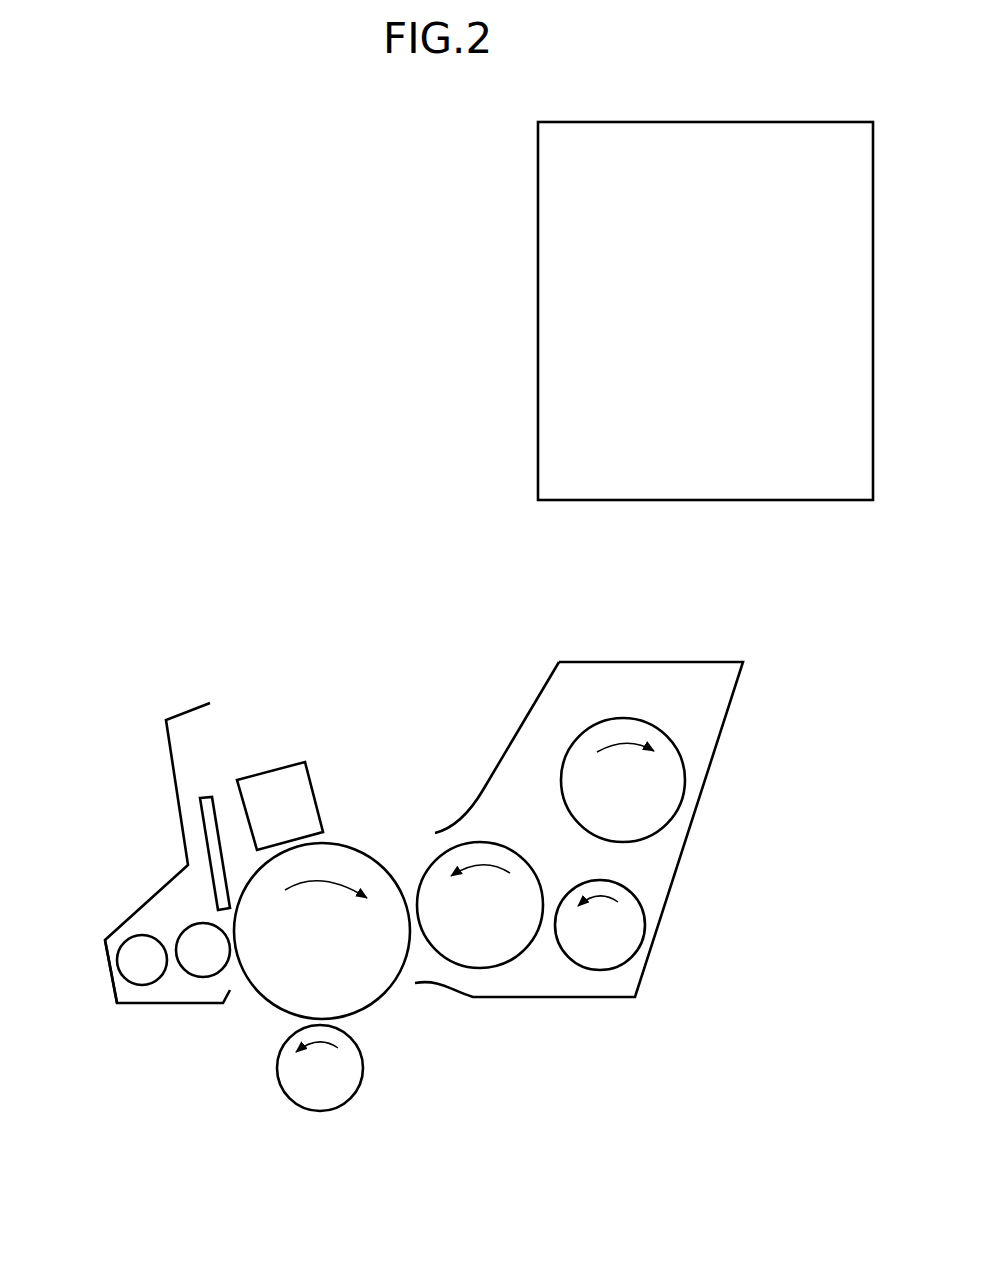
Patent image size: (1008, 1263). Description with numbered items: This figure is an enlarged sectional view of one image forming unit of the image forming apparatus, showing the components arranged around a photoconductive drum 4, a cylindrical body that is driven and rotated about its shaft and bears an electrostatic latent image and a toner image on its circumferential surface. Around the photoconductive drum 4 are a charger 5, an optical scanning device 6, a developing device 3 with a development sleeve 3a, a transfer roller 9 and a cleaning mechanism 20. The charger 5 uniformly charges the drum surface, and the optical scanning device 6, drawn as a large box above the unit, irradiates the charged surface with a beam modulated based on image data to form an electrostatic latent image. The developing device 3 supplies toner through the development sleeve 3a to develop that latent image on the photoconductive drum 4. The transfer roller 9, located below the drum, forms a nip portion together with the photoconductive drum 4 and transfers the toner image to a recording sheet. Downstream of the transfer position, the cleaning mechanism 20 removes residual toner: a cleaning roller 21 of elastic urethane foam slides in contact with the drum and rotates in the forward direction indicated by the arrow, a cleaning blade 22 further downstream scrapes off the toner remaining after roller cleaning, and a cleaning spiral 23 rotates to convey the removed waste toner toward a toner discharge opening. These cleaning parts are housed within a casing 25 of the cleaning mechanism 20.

The developing device 3 is at (700, 667).
The development sleeve 3a is at (512, 957).
The photoconductive drum 4 is at (395, 990).
The charger 5 is at (297, 773).
The optical scanning device 6 is at (524, 300).
The transfer roller 9 is at (352, 1100).
The cleaning mechanism 20 is at (122, 800).
The cleaning roller 21 is at (197, 933).
The cleaning blade 22 is at (202, 825).
The cleaning spiral 23 is at (122, 967).
The casing 25 is at (104, 948).